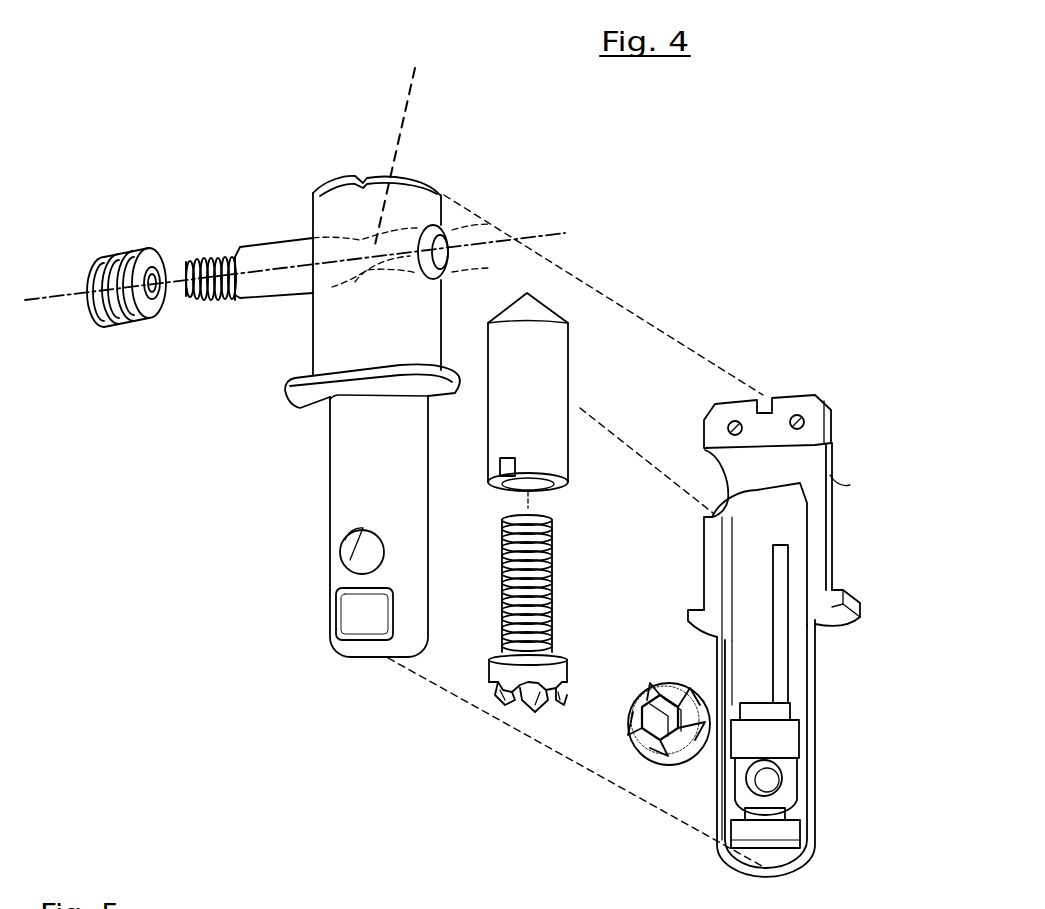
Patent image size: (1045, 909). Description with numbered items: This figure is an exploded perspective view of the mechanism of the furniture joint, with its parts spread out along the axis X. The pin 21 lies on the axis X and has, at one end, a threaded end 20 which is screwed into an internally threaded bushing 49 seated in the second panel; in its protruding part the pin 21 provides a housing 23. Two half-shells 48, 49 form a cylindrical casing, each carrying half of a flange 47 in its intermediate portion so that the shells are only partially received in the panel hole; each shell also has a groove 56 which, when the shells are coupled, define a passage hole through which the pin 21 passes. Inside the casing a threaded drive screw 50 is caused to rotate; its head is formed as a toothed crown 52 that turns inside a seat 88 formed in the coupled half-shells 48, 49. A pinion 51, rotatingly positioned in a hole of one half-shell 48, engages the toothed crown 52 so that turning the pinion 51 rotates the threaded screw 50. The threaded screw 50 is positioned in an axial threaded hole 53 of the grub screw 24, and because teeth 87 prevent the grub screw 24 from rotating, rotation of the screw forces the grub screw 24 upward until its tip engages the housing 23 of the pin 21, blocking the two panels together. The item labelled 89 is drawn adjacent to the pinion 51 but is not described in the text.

The axis X is at (57, 288).
The threaded end 20 is at (210, 263).
The pin 21 is at (275, 243).
The housing 23 is at (401, 131).
The grub screw 24 is at (541, 385).
The flange 47 is at (287, 385).
The half-shell 48 is at (348, 477).
The half-shell / internally threaded bushing 49 is at (115, 328).
The threaded drive screw 50 is at (500, 633).
The pinion 51 is at (650, 730).
The toothed crown 52 is at (487, 695).
The axial threaded hole 53 is at (548, 488).
The groove 56 is at (430, 228).
The teeth 87 is at (472, 262).
The seat 88 is at (789, 734).
The hexagon socket 89 is at (633, 713).